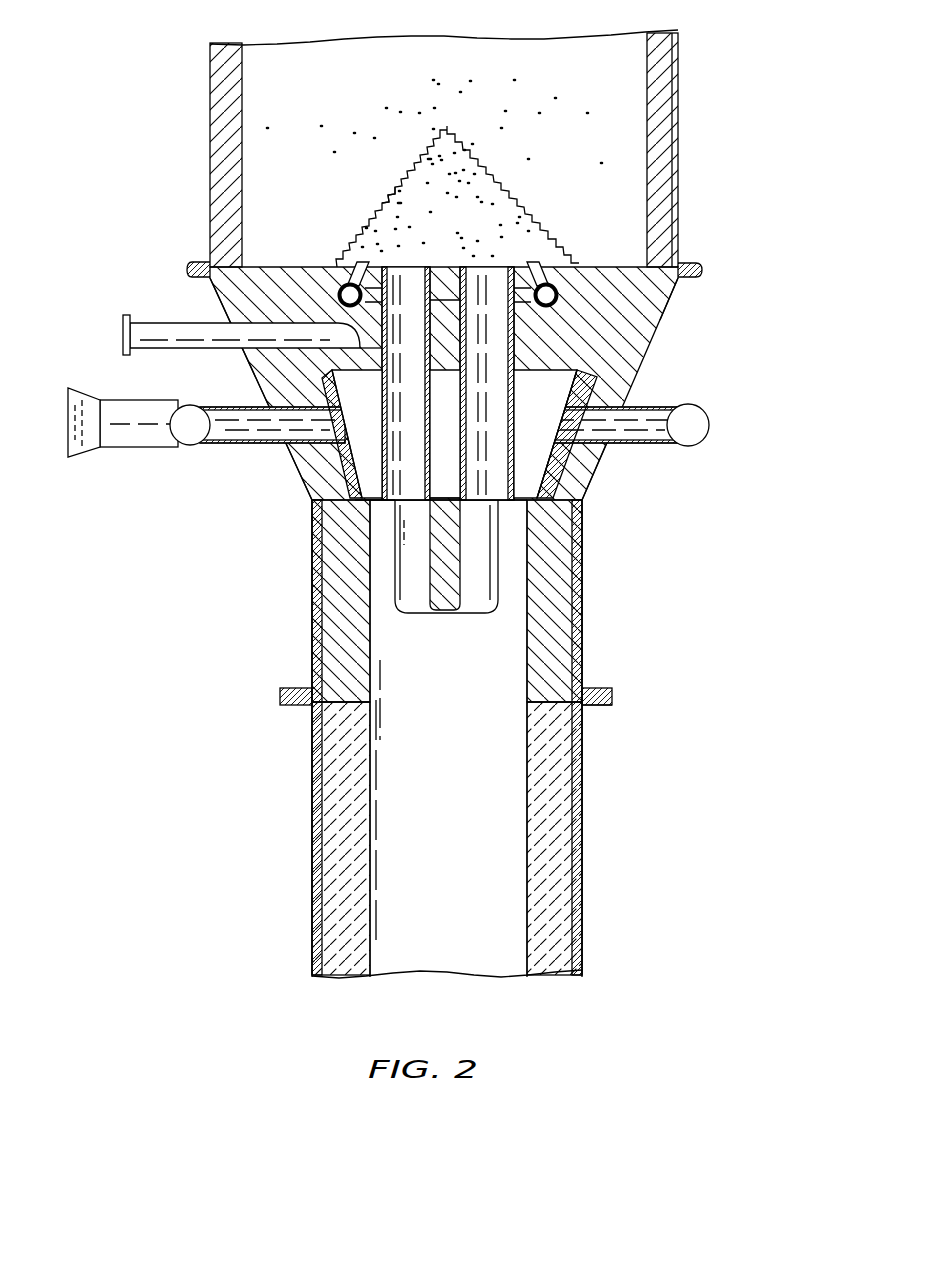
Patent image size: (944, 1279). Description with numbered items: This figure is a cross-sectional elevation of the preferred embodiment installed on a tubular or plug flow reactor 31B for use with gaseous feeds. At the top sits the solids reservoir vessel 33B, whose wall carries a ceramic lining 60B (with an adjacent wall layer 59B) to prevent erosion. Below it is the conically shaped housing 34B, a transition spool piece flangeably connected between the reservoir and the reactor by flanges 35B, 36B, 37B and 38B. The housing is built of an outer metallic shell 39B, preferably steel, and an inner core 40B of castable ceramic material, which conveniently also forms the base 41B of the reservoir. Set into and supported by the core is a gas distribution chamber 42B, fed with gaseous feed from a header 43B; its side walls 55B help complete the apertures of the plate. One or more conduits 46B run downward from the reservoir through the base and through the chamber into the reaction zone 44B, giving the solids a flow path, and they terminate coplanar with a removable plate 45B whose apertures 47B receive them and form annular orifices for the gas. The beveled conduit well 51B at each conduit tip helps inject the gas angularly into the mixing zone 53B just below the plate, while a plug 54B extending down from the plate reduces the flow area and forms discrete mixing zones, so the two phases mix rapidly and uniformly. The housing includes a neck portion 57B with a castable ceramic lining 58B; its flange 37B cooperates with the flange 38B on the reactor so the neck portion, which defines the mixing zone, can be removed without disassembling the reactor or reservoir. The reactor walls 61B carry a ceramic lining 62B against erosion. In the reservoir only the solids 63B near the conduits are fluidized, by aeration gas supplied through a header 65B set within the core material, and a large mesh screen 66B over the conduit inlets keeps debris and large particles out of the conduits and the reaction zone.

The ceramic lining 60B is at (665, 74).
The hopper wall lining 59B is at (680, 131).
The solids reservoir vessel 33B is at (508, 87).
The large mesh screen 66B is at (406, 162).
The solids 63B is at (476, 227).
The base of the reservoir 41B is at (258, 265).
The header 65B is at (308, 267).
The flange 35B is at (690, 265).
The flange 36B is at (690, 280).
The housing 34B is at (660, 340).
The side walls of gas distribution chamber 55B is at (597, 376).
The conduit well 51B is at (355, 351).
The header 43B is at (212, 450).
The inner core 40B is at (320, 472).
The conduits 46B is at (425, 365).
The gas distribution chamber 42B is at (376, 418).
The removable plate 45B is at (447, 492).
The outer metallic shell 39B is at (598, 478).
The lining 58B is at (565, 540).
The apertures 47B is at (395, 509).
The plug 54B is at (458, 562).
The mixing zone 53B is at (428, 571).
The neck portion 57B is at (312, 623).
The flange 37B is at (600, 689).
The flange 38B is at (602, 706).
The tubular or plug flow reactor 31B is at (312, 805).
The reactor walls 61B is at (578, 790).
The ceramic lining 62B is at (560, 829).
The reaction zone 44B is at (484, 792).